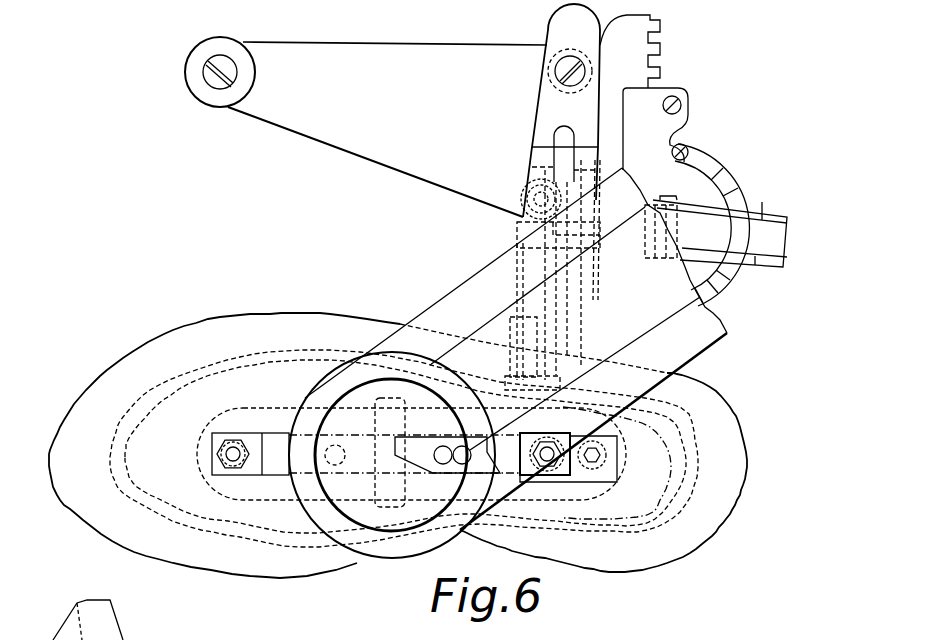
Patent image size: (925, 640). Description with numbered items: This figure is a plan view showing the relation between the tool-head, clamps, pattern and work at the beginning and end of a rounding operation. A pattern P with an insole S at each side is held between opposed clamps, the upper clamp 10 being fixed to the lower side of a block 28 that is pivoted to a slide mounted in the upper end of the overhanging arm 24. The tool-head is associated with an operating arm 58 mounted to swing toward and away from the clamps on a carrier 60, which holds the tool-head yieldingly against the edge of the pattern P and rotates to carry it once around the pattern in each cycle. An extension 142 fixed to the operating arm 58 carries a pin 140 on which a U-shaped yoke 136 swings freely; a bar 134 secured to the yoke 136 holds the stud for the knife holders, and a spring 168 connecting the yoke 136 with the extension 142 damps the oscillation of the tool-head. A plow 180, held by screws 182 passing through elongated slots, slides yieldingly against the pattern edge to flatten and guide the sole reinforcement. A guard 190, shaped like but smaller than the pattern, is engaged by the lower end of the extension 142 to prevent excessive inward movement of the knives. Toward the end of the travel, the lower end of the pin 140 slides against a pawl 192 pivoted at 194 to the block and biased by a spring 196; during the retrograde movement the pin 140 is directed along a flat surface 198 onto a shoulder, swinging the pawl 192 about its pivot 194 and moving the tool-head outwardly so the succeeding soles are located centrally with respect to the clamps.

The upper clamp 10 is at (163, 563).
The pattern P is at (180, 400).
The insole S is at (200, 380).
The guard 190 is at (262, 408).
The block 28 is at (270, 468).
The spring 196 is at (592, 482).
The pawl 192 is at (608, 438).
The pivot 194 is at (610, 462).
The overhanging arm 24 is at (453, 292).
The pin 140 is at (612, 352).
The operating arm 58 is at (377, 145).
The extension 142 is at (545, 103).
The carrier 60 is at (695, 182).
The spring 168 is at (590, 206).
The screws 182 is at (503, 242).
The U-shaped yoke 136 is at (598, 277).
The bar 134 is at (598, 297).
The plow 180 is at (510, 333).
The flat surface 198 is at (512, 375).